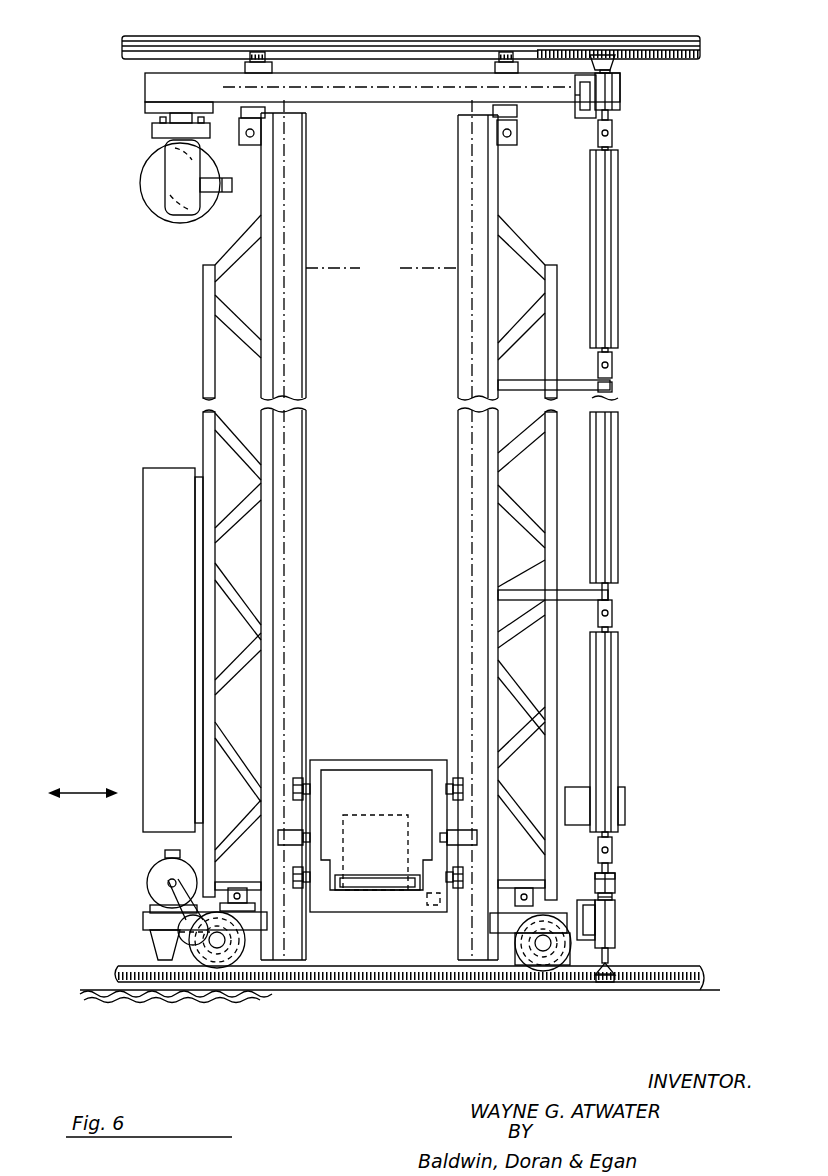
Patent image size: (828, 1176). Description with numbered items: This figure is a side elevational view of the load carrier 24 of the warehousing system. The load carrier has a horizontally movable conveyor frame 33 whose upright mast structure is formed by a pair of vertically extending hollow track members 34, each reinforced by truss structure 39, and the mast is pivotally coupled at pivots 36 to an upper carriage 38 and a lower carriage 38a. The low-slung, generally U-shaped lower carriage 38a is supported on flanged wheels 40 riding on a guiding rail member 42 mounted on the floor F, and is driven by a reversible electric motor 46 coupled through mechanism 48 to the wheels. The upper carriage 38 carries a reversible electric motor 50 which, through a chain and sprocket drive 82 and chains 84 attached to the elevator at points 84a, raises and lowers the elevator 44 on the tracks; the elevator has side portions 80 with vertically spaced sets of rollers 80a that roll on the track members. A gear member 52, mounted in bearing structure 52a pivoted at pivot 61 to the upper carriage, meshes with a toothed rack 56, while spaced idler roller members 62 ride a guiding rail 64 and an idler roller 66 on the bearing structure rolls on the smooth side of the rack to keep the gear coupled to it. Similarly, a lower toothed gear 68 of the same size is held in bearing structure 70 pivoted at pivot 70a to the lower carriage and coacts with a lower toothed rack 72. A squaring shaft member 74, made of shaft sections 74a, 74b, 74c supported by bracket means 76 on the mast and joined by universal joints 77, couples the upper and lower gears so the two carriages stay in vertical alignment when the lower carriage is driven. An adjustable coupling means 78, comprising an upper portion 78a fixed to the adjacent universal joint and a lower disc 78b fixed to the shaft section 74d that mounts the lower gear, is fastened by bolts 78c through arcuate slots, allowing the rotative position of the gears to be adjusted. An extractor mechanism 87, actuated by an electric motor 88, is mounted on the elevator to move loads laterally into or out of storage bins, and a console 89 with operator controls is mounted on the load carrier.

The load carrier 24 is at (124, 619).
The conveyor frame 33 is at (198, 300).
The track members 34 is at (303, 500).
The pivotal coupling 36 is at (254, 133).
The upper carriage 38 is at (390, 73).
The lower carriage 38a is at (385, 985).
The truss structure 39 is at (548, 265).
The flanged wheels 40 is at (196, 958).
The guiding rail member 42 is at (692, 980).
The elevator 44 is at (416, 754).
The electric motor 46 is at (148, 880).
The mechanism 48 is at (173, 926).
The electric motor 50 is at (178, 222).
The gear member 52 is at (616, 56).
The bearing structure 52a is at (608, 92).
The toothed rack 56 is at (678, 50).
The pivot 61 is at (578, 100).
The idler roller members 62 is at (262, 52).
The guiding rail 64 is at (122, 43).
The idler roller 66 is at (598, 55).
The toothed gear 68 is at (640, 988).
The bearing structure 70 is at (606, 922).
The pivot 70a is at (590, 926).
The toothed rack 72 is at (578, 988).
The shaft member 74 is at (647, 419).
The shaft section 74a is at (610, 710).
The shaft section 74b is at (608, 500).
The shaft section 74c is at (612, 212).
The shaft section 74d is at (608, 963).
The bracket means 76 is at (525, 385).
The universal joints 77 is at (612, 133).
The adjustable coupling means 78 is at (620, 880).
The upper portion 78a is at (618, 874).
The lower disc 78b is at (615, 893).
The bolts 78c is at (598, 897).
The side portions 80 is at (321, 788).
The rollers 80a is at (292, 782).
The chain and sprocket drive 82 is at (192, 150).
The chains 84 is at (382, 269).
The chain attachment 84a is at (285, 838).
The extractor mechanism 87 is at (376, 795).
The electric motor 88 is at (430, 906).
The console 89 is at (622, 790).
The floor F is at (100, 1002).